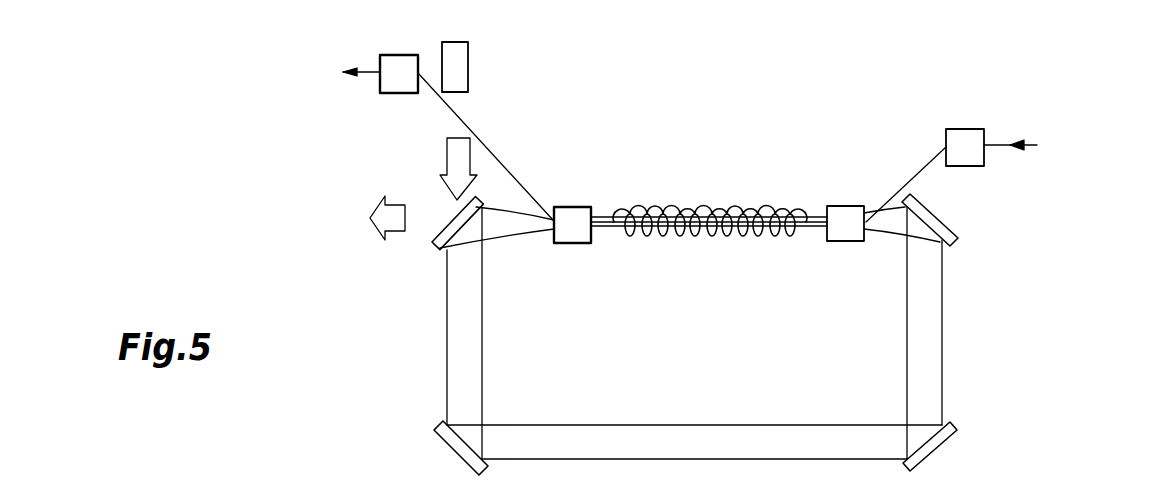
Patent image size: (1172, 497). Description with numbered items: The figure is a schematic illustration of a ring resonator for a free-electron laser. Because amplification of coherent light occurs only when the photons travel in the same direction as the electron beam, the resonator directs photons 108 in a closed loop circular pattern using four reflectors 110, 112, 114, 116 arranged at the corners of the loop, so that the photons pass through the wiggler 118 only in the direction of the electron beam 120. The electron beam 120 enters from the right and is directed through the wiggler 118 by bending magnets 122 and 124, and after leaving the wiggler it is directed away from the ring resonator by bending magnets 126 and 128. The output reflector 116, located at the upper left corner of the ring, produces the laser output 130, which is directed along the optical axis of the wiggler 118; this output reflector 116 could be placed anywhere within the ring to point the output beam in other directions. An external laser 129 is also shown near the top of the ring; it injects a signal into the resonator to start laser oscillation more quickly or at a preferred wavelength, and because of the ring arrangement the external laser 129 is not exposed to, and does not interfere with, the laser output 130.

The photons 108 is at (473, 299).
The reflector 110 is at (447, 450).
The reflector 112 is at (945, 440).
The reflector 114 is at (943, 223).
The output reflector 116 is at (440, 248).
The wiggler 118 is at (758, 232).
The electron beam 120 is at (1057, 178).
The bending magnet 122 is at (972, 135).
The bending magnet 124 is at (852, 205).
The bending magnet 126 is at (588, 210).
The bending magnet 128 is at (390, 81).
The external laser 129 is at (470, 58).
The laser output 130 is at (372, 208).